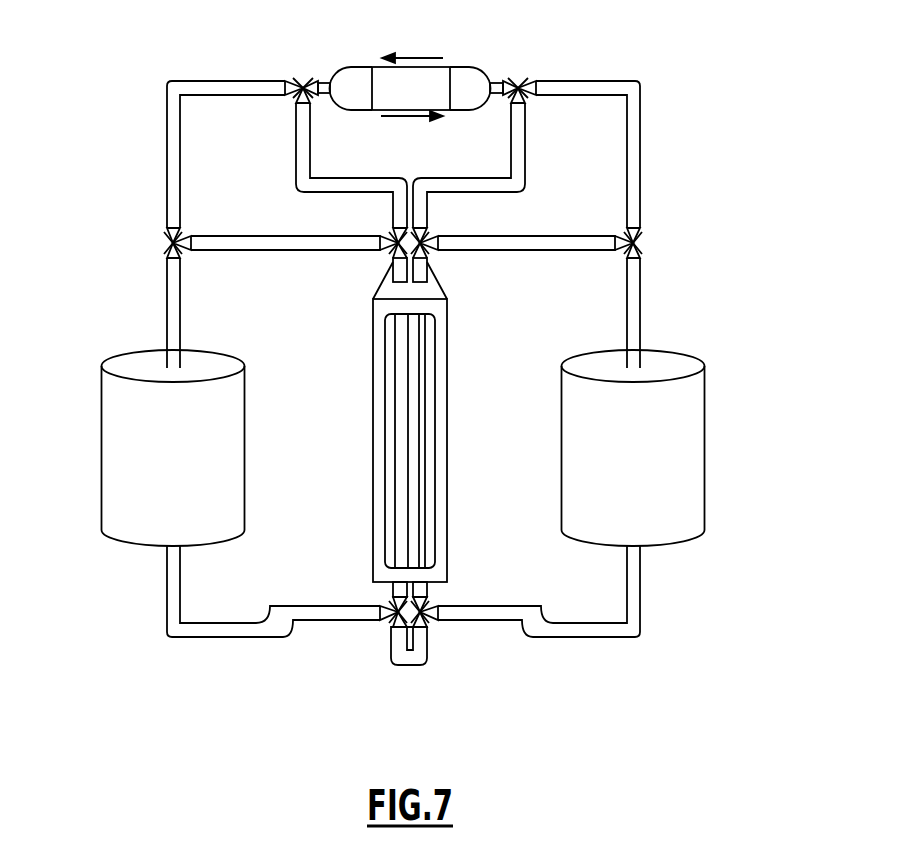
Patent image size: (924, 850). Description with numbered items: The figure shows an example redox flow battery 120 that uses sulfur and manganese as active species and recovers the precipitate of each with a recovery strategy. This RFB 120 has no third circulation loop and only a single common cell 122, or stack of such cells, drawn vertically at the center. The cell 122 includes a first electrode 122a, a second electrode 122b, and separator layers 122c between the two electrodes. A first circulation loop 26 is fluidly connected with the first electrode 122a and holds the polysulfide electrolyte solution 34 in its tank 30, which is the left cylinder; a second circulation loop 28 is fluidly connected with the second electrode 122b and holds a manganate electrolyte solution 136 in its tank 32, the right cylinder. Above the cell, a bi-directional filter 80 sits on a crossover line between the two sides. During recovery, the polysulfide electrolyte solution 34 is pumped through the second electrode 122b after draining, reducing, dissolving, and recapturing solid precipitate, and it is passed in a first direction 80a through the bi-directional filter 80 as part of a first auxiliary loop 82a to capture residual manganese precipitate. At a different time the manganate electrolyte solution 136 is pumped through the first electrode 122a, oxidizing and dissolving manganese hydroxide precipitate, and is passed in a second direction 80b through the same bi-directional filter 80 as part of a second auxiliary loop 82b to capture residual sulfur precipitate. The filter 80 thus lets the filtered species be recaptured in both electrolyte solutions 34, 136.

The bi-directional filter 80 is at (433, 67).
The first direction 80a is at (407, 120).
The second direction 80b is at (413, 55).
The first auxiliary loop 82a is at (222, 87).
The second auxiliary loop 82b is at (585, 85).
The first circulation loop 26 is at (167, 300).
The second circulation loop 28 is at (641, 312).
The tank 30 is at (102, 516).
The tank 32 is at (705, 507).
The polysulfide electrolyte solution 34 is at (110, 471).
The manganate electrolyte solution 136 is at (700, 455).
The redox flow battery 120 is at (134, 693).
The cell 122 is at (362, 543).
The first electrode 122a is at (400, 393).
The second electrode 122b is at (417, 413).
The separator layers 122c is at (412, 334).